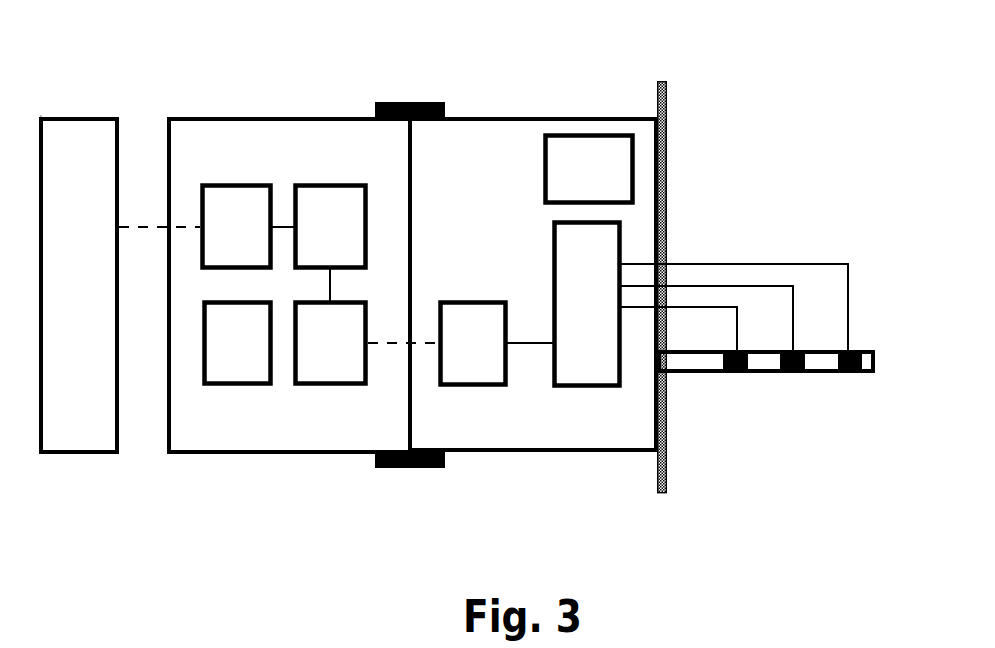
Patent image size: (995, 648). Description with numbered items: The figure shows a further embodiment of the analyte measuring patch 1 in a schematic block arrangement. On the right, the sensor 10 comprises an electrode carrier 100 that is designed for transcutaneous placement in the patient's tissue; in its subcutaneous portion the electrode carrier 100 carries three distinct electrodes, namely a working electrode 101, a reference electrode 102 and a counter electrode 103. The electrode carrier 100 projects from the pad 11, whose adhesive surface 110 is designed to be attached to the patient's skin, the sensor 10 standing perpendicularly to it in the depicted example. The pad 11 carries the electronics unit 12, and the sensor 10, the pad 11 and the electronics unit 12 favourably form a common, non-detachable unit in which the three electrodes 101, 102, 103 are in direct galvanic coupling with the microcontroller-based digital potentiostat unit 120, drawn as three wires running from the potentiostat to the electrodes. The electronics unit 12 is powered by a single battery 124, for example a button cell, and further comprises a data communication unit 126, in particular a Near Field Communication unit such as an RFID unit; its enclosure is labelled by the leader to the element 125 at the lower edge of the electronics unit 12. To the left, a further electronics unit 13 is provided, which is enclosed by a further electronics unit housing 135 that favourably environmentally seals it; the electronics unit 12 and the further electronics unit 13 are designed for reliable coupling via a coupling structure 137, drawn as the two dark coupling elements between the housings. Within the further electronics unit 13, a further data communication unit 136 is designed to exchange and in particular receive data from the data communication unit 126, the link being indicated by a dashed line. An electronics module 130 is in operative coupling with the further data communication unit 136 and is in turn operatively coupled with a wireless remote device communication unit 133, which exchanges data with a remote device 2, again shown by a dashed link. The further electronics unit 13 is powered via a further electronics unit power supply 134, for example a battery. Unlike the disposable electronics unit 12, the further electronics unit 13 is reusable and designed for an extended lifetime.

The analyte measuring patch 1 is at (846, 81).
The remote device 2 is at (88, 303).
The sensor 10 is at (881, 308).
The pad 11 is at (665, 85).
The electronics unit 12 is at (493, 438).
The further electronics unit 13 is at (311, 428).
The electrode carrier 100 is at (682, 363).
The working electrode 101 is at (852, 373).
The reference electrode 102 is at (793, 373).
The counter electrode 103 is at (735, 373).
The adhesive surface 110 is at (667, 177).
The digital potentiostat unit 120 is at (614, 313).
The battery 124 is at (615, 190).
The housing of control unit 125 is at (593, 455).
The data communication unit 126 is at (499, 360).
The electronics module 130 is at (357, 243).
The wireless remote device communication unit 133 is at (263, 243).
The further electronics unit power supply 134 is at (264, 363).
The further electronics unit housing 135 is at (287, 455).
The further data communication unit 136 is at (357, 363).
The coupling structure 137 is at (400, 93).